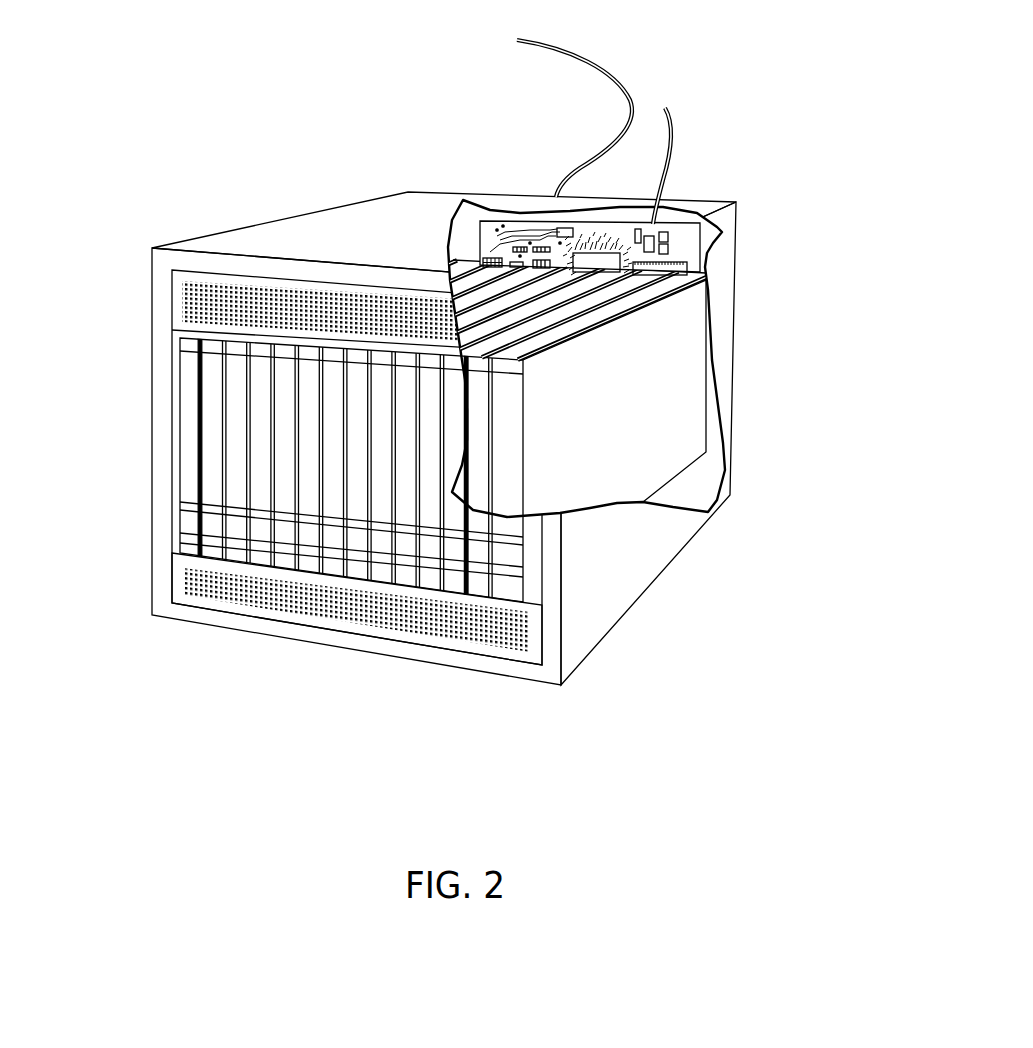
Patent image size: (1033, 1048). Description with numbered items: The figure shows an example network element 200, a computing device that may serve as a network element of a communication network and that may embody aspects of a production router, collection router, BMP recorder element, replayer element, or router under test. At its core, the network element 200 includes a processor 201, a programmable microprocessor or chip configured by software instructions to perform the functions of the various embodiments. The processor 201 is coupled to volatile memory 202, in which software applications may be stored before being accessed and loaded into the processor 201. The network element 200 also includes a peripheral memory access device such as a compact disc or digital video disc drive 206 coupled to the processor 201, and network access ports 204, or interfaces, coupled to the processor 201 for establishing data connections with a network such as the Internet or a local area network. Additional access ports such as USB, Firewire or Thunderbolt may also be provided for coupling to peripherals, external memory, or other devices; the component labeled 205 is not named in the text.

The network element 200 is at (89, 161).
The processor 201 is at (500, 210).
The volatile memory 202 is at (442, 356).
The network access ports 204 is at (294, 470).
The connector 205 is at (401, 206).
The compact disc (CD) or digital video disc (DVD) drive 206 is at (611, 123).